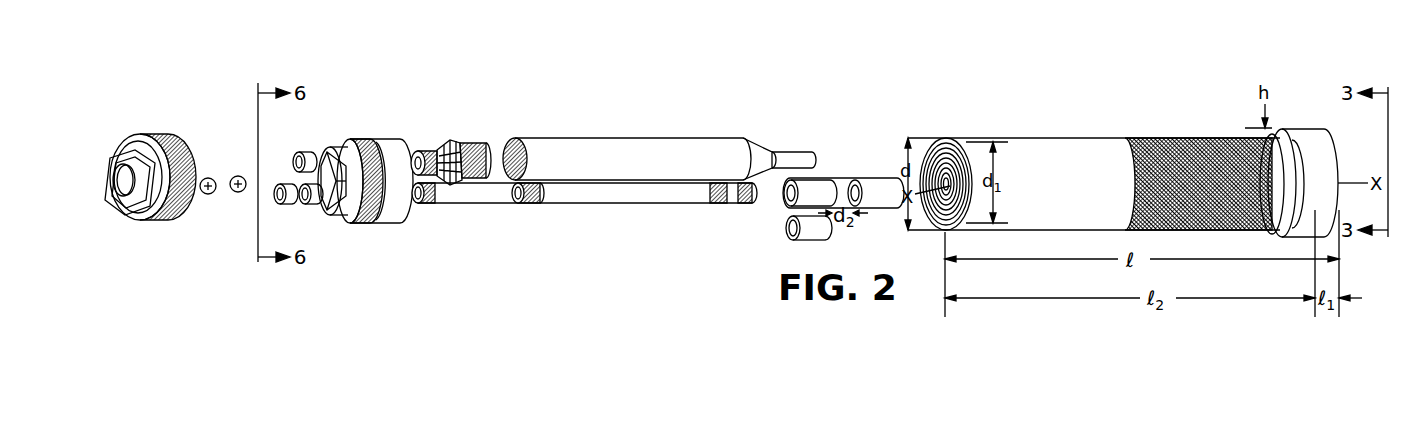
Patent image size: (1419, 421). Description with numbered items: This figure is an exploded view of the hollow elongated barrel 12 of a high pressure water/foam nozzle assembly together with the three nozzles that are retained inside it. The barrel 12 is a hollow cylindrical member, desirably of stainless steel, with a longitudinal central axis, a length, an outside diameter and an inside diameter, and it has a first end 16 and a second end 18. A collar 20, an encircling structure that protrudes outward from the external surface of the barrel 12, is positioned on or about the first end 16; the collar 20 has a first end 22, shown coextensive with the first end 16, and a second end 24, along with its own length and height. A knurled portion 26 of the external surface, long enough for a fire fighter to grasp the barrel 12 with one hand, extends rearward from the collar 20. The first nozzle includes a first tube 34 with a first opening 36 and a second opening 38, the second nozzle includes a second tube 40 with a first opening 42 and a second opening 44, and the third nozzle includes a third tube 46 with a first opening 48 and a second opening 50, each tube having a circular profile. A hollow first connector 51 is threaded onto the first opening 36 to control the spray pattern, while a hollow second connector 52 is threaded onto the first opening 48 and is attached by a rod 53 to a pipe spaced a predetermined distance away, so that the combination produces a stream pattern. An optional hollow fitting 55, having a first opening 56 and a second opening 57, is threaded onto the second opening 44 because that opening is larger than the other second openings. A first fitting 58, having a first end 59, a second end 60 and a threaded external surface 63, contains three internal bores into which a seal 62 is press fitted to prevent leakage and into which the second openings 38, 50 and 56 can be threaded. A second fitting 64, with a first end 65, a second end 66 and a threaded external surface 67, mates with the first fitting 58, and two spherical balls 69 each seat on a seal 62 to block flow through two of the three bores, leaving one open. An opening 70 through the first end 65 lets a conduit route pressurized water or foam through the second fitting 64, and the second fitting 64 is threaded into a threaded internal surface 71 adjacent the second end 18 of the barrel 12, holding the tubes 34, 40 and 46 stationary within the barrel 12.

The hollow elongated barrel 12 is at (1145, 148).
The first end 16 is at (1319, 148).
The second end 18 is at (963, 162).
The collar 20 is at (1317, 148).
The first end 22 is at (1316, 117).
The second end 24 is at (1284, 129).
The knurled portion 26 is at (1190, 140).
The first tube 34 is at (588, 219).
The first opening 36 is at (718, 204).
The second opening 38 is at (526, 204).
The second tube 40 is at (682, 134).
The first opening 42 is at (812, 153).
The second opening 44 is at (513, 139).
The third tube 46 is at (480, 204).
The first opening 48 is at (742, 204).
The second opening 50 is at (425, 204).
The first connector 51 is at (807, 241).
The second connector 52 is at (752, 196).
The rod 53 is at (843, 178).
The fitting 55 is at (448, 140).
The first opening 56 is at (420, 150).
The second opening 57 is at (478, 145).
The first fitting 58 is at (382, 144).
The first end 59 is at (331, 146).
The second end 60 is at (408, 150).
The seal 62 is at (302, 152).
The threaded external surface 63 is at (352, 148).
The second fitting 64 is at (146, 154).
The first end 65 is at (136, 213).
The second end 66 is at (189, 150).
The threaded external surface 67 is at (154, 133).
The spherical ball 69 is at (238, 193).
The opening 70 is at (118, 178).
The threaded internal surface 71 is at (960, 160).